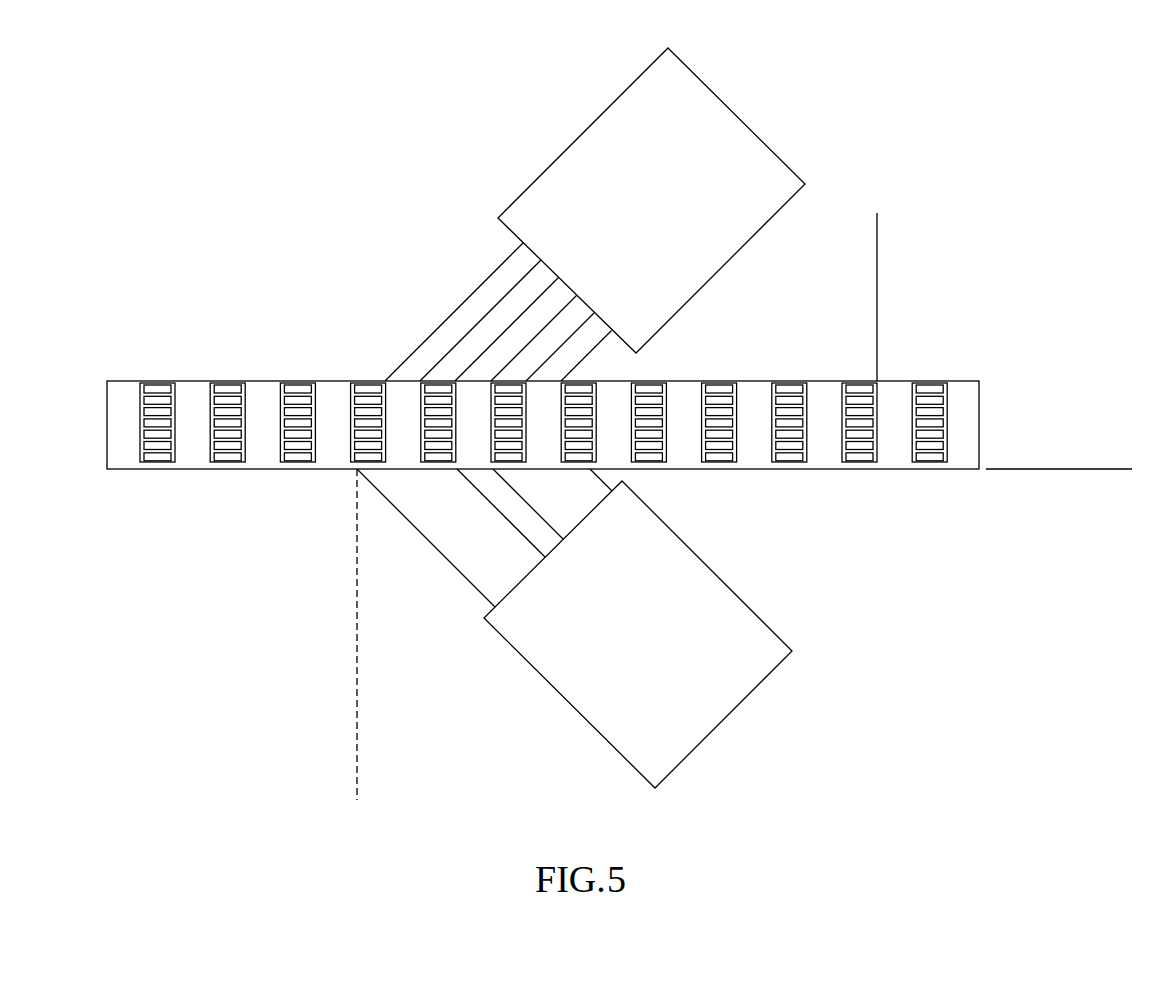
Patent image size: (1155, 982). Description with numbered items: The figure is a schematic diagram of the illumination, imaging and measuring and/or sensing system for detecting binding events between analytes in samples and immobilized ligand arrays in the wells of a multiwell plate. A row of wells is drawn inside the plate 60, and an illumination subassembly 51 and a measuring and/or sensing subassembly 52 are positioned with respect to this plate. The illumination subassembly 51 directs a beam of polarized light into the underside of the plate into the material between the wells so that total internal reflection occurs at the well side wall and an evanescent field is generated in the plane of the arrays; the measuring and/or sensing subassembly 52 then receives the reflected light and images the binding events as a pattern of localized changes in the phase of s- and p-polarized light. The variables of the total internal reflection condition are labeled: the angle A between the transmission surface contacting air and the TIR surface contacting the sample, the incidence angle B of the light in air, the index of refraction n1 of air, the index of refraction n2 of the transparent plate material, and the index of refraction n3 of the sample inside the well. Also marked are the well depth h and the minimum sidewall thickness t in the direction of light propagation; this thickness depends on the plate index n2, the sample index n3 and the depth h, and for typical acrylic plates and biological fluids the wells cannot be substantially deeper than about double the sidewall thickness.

The substrate with pixel array 60 is at (124, 420).
The measuring and/or sensing subassembly 52 is at (716, 120).
The illumination subassembly 51 is at (740, 684).
The angle between the transmission surface and the TIR surface A is at (877, 223).
The incidence angle B is at (455, 567).
The well depth h is at (197, 384).
The sidewall thickness t is at (280, 380).
The index of refraction of air n1 is at (328, 485).
The index of refraction of the plate n2 is at (335, 424).
The index of refraction of the sample n3 is at (359, 446).